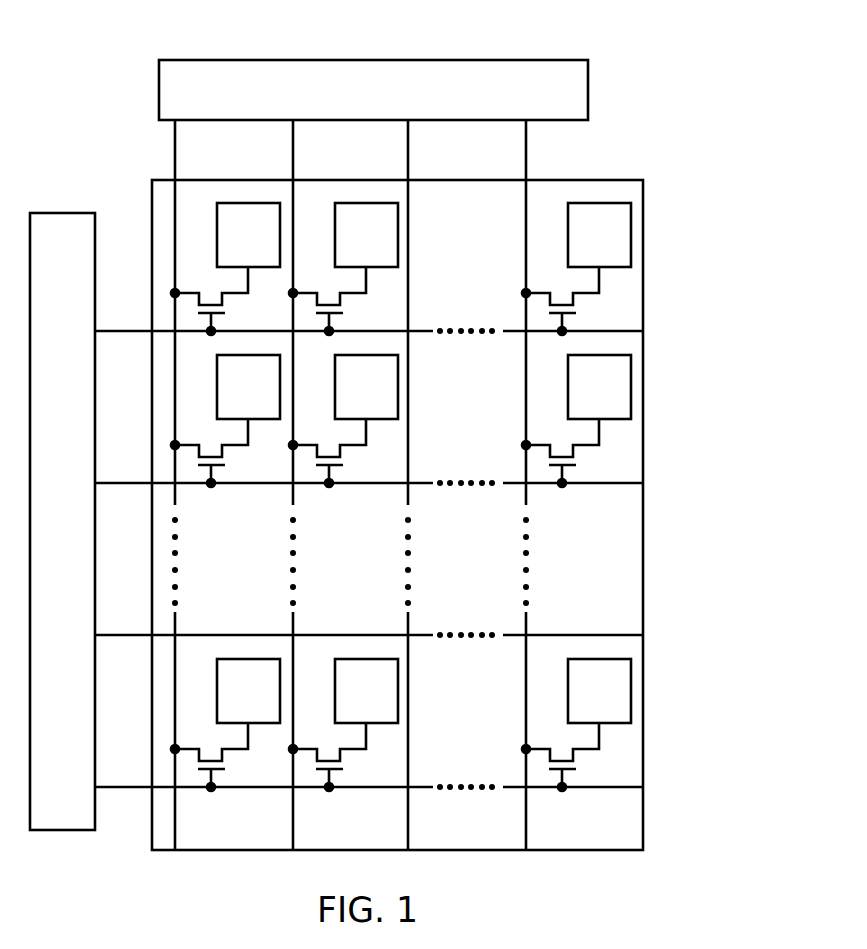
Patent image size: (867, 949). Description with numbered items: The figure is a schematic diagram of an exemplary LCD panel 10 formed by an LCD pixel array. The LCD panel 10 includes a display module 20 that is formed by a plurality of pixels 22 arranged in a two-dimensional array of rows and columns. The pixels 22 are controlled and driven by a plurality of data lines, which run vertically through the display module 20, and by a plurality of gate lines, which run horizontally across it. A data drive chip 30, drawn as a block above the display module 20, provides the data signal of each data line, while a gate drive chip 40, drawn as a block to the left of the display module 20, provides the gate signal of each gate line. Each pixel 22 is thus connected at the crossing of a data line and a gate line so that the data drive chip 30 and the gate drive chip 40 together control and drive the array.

The LCD panel 10 is at (618, 72).
The display module 20 is at (656, 262).
The pixel 22 is at (220, 228).
The data drive chip 30 is at (494, 60).
The gate drive chip 40 is at (72, 212).